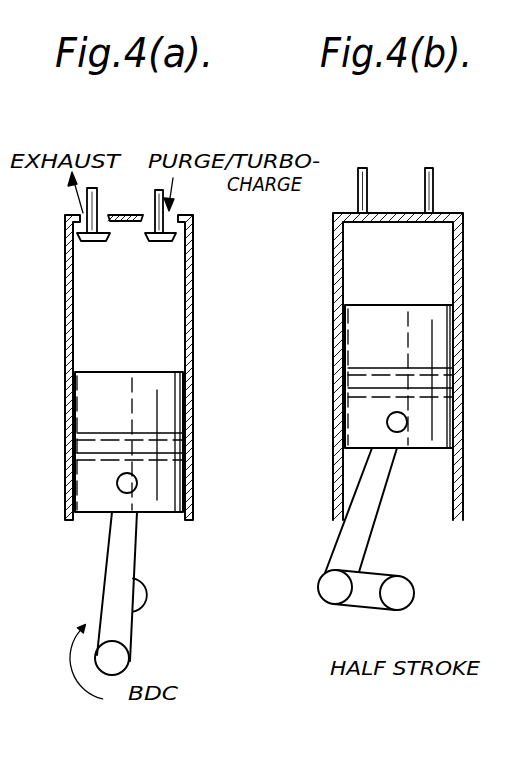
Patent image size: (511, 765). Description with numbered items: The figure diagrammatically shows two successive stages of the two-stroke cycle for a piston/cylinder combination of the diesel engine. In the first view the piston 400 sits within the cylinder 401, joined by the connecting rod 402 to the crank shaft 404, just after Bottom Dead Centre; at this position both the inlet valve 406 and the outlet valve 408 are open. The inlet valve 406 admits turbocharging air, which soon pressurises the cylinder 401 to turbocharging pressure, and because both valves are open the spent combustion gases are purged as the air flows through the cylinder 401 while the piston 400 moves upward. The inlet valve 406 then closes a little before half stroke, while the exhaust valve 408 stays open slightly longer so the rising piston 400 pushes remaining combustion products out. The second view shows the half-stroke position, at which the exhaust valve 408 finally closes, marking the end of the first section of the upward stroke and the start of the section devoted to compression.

The piston 400 is at (165, 407).
The cylinder 401 is at (194, 290).
The connecting rod 402 is at (122, 546).
The crank shaft 404 is at (138, 625).
The inlet valve 406 is at (153, 203).
The outlet valve 408 is at (87, 203).